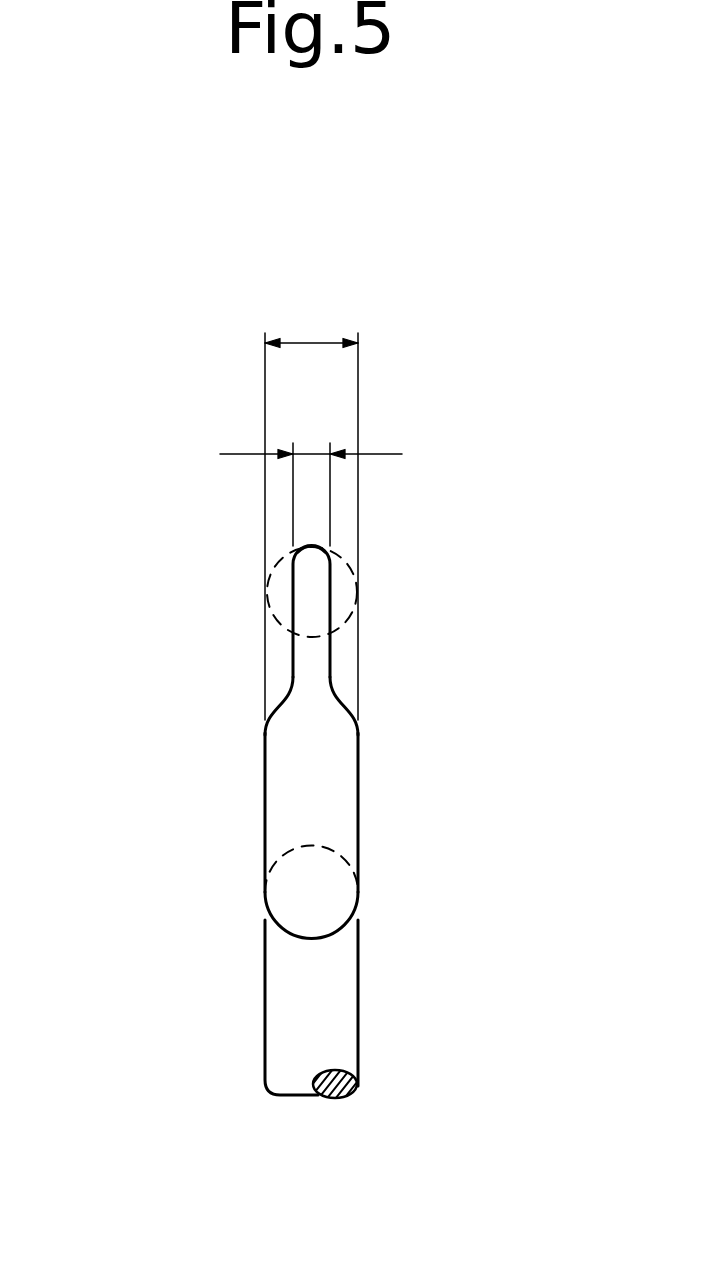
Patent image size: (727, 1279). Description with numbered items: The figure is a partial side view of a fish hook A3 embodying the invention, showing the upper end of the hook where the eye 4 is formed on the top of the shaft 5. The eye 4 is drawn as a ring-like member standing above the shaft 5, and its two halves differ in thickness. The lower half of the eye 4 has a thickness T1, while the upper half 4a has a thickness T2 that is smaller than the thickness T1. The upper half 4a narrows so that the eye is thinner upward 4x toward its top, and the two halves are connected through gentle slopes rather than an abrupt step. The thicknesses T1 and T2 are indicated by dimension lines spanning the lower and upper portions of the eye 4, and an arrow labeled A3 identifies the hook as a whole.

The eye 4 is at (333, 767).
The upper half of the eye 4a is at (232, 547).
The thinner upward portion of the eye 4x is at (312, 543).
The shaft 5 is at (280, 985).
The fish hook A3 is at (380, 1003).
The thickness of the lower half of the eye T1 is at (311, 510).
The thickness of the upper half of the eye T2 is at (311, 475).